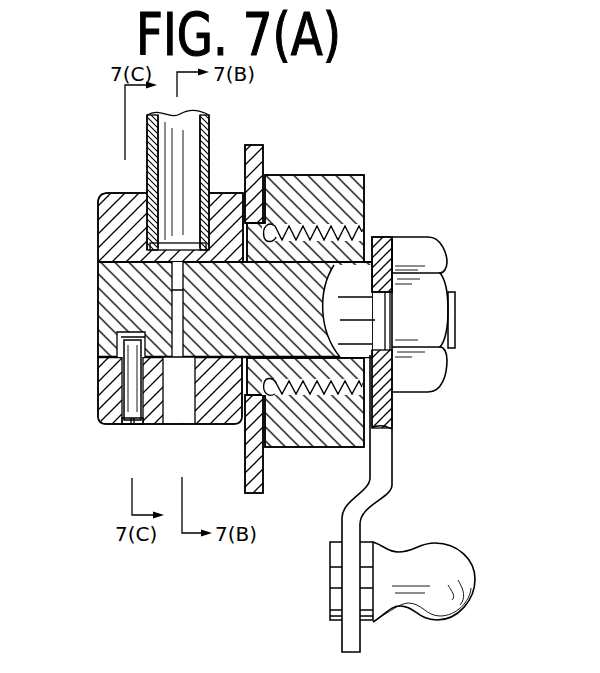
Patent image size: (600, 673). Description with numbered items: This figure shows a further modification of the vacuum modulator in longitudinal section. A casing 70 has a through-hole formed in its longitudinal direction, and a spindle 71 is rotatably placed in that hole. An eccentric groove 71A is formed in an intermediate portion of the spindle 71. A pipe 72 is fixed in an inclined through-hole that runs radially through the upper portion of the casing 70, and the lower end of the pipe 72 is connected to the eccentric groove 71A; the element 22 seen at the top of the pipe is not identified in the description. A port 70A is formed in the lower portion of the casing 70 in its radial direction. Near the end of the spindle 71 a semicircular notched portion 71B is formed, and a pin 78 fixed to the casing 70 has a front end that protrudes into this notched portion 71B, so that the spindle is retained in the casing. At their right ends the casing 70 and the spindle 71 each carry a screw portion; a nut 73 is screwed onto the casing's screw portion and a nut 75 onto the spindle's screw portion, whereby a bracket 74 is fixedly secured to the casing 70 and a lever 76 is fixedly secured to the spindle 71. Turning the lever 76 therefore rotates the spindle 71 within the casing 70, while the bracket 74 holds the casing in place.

The cable 22 is at (176, 113).
The casing 70 is at (108, 212).
The port 70A is at (186, 415).
The spindle 71 is at (98, 275).
The eccentric groove 71A is at (176, 283).
The semicircular notched portion 71B is at (121, 345).
The pipe 72 is at (210, 130).
The nut 73 is at (352, 197).
The bracket 74 is at (264, 153).
The nut 75 is at (428, 248).
The lever 76 is at (393, 455).
The pin 78 is at (134, 426).